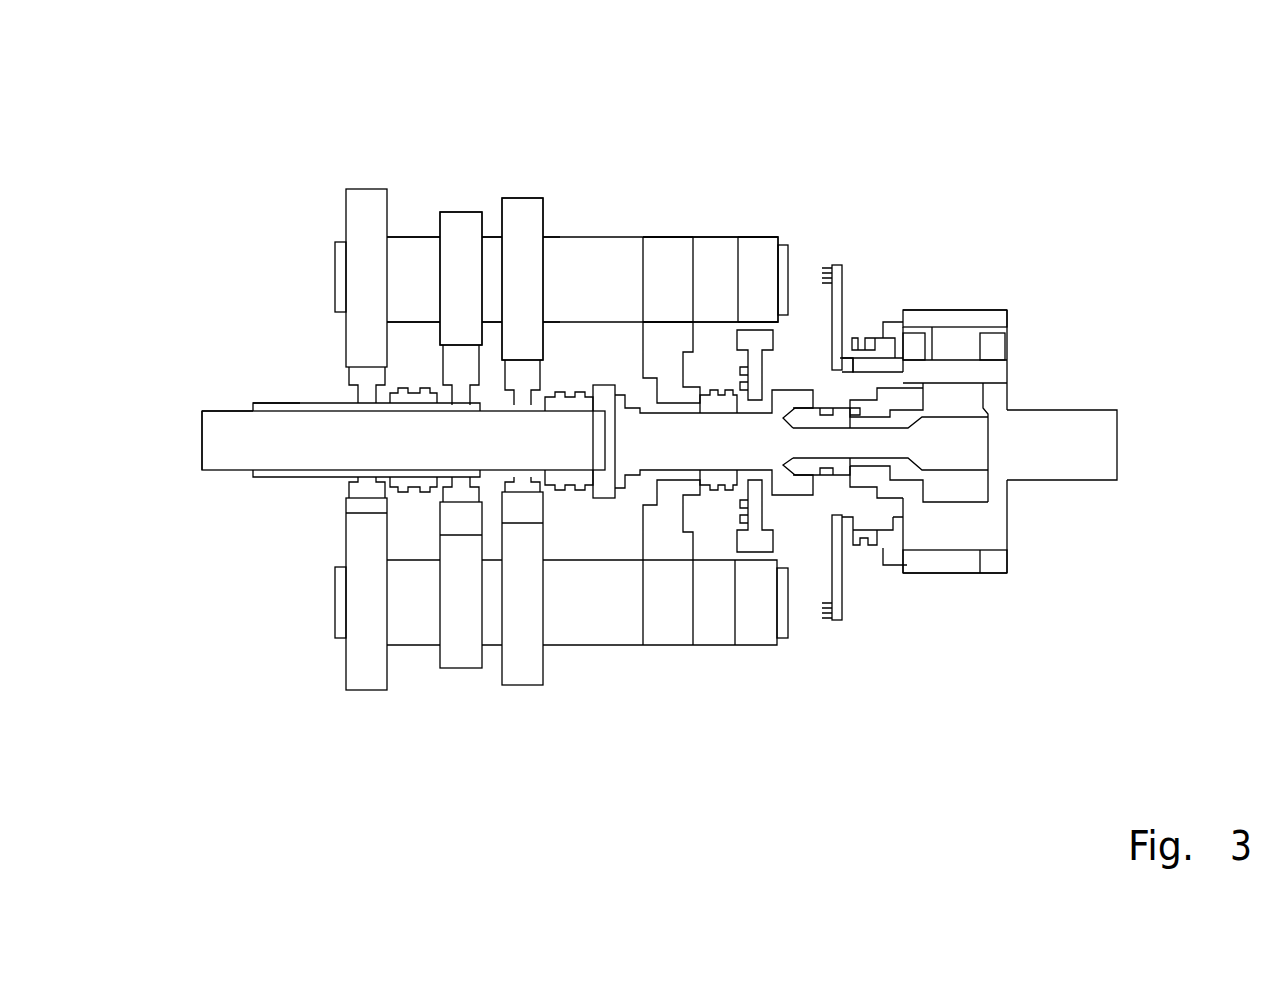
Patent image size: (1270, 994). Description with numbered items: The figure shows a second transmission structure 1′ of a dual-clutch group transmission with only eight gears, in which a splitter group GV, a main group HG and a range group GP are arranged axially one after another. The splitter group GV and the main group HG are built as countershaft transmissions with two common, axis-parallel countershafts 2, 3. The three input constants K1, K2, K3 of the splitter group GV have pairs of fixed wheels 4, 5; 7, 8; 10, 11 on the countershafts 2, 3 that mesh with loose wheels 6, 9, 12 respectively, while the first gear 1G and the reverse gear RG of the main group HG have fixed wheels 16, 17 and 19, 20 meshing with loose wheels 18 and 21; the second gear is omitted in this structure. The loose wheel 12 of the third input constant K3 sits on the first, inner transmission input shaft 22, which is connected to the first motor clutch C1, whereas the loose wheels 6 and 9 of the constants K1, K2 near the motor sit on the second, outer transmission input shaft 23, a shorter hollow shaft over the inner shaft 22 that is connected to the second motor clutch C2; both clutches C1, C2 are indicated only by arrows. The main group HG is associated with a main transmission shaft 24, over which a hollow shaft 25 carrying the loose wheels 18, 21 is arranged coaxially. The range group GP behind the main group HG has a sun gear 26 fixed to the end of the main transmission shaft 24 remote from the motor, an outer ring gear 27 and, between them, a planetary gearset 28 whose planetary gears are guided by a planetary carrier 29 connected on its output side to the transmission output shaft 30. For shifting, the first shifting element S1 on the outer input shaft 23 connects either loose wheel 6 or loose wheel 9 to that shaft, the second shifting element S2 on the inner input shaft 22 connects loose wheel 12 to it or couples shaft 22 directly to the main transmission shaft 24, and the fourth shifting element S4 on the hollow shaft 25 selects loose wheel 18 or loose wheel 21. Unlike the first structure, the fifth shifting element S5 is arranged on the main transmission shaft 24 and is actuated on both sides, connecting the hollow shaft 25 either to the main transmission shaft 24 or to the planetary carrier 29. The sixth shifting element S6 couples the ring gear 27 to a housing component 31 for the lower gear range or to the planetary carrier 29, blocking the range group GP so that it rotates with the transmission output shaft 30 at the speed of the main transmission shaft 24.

The transmission structure 1′ is at (244, 222).
The countershaft 2 is at (335, 268).
The countershaft 3 is at (335, 567).
The fixed wheel 4 is at (343, 237).
The fixed wheel 5 is at (365, 690).
The loose wheel 6 is at (347, 505).
The fixed wheel 7 is at (437, 212).
The fixed wheel 8 is at (467, 668).
The loose wheel 9 is at (438, 537).
The fixed wheel 10 is at (498, 212).
The fixed wheel 11 is at (523, 690).
The loose wheel 12 is at (543, 523).
The fixed wheel 16 is at (655, 237).
The fixed wheel 17 is at (667, 645).
The loose wheel 18 is at (643, 530).
The fixed wheel 19 is at (740, 237).
The fixed wheel 20 is at (755, 645).
The loose wheel 21 is at (739, 545).
The inner transmission input shaft 22 is at (212, 470).
The outer transmission input shaft 23 is at (268, 478).
The main transmission shaft 24 is at (787, 393).
The hollow shaft 25 is at (645, 403).
The sun gear 26 is at (913, 417).
The ring gear 27 is at (915, 578).
The planetary gearset 28 is at (980, 337).
The planetary carrier 29 is at (980, 577).
The transmission output shaft 30 is at (1068, 410).
The housing component 31 is at (843, 622).
The first input constant K1 is at (366, 275).
The second input constant K2 is at (459, 246).
The third input constant K3 is at (521, 254).
The first gear 1G is at (668, 235).
The reverse gear RG is at (757, 235).
The splitter group GV is at (540, 66).
The main group HG is at (780, 66).
The range group GP is at (1005, 66).
The first motor clutch C1 is at (215, 398).
The second motor clutch C2 is at (275, 390).
The first shifting element S1 is at (413, 507).
The second shifting element S2 is at (565, 500).
The fourth shifting element S4 is at (710, 504).
The fifth shifting element S5 is at (817, 500).
The sixth shifting element S6 is at (867, 562).